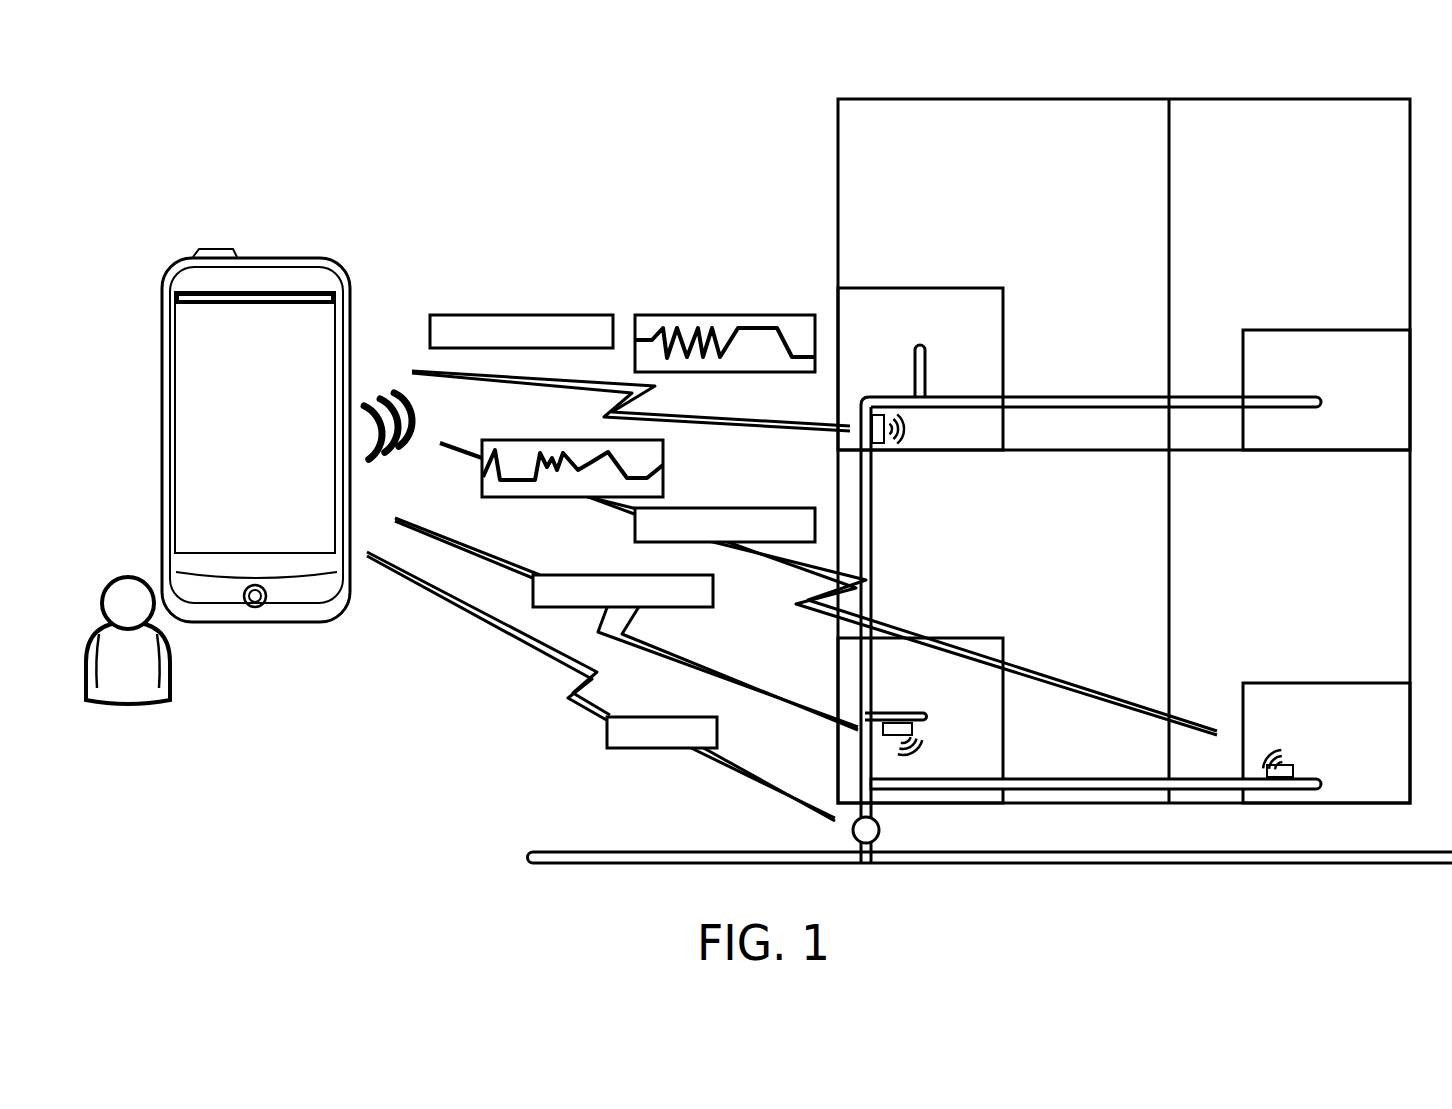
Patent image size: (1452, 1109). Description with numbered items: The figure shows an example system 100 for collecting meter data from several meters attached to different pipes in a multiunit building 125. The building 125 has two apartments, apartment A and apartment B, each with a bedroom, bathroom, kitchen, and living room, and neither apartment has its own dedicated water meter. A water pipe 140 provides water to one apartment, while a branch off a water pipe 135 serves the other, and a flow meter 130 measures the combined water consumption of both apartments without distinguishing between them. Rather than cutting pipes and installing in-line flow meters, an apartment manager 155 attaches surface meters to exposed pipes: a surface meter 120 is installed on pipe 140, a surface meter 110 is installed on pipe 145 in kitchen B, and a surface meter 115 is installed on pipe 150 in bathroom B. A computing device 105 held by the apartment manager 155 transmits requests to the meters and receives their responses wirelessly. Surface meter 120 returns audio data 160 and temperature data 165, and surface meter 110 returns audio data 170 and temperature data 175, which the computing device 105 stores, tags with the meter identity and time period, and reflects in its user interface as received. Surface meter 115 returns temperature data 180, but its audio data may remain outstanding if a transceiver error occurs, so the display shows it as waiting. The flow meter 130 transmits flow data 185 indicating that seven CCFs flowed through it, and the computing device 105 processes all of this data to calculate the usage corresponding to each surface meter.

The system 100 is at (171, 93).
The computing device 105 is at (166, 265).
The surface meter 110 is at (920, 730).
The surface meter 115 is at (1300, 770).
The surface meter 120 is at (888, 450).
The multiunit building 125 is at (834, 96).
The flow meter 130 is at (885, 830).
The water pipe 135 is at (636, 848).
The water pipe 140 is at (876, 528).
The pipe 145 is at (884, 704).
The pipe 150 is at (1095, 775).
The apartment manager 155 is at (171, 694).
The audio data 160 is at (688, 313).
The temperature data 165 is at (485, 313).
The audio data 170 is at (502, 437).
The temperature data 175 is at (752, 505).
The temperature data 180 is at (716, 609).
The flow data 185 is at (603, 728).